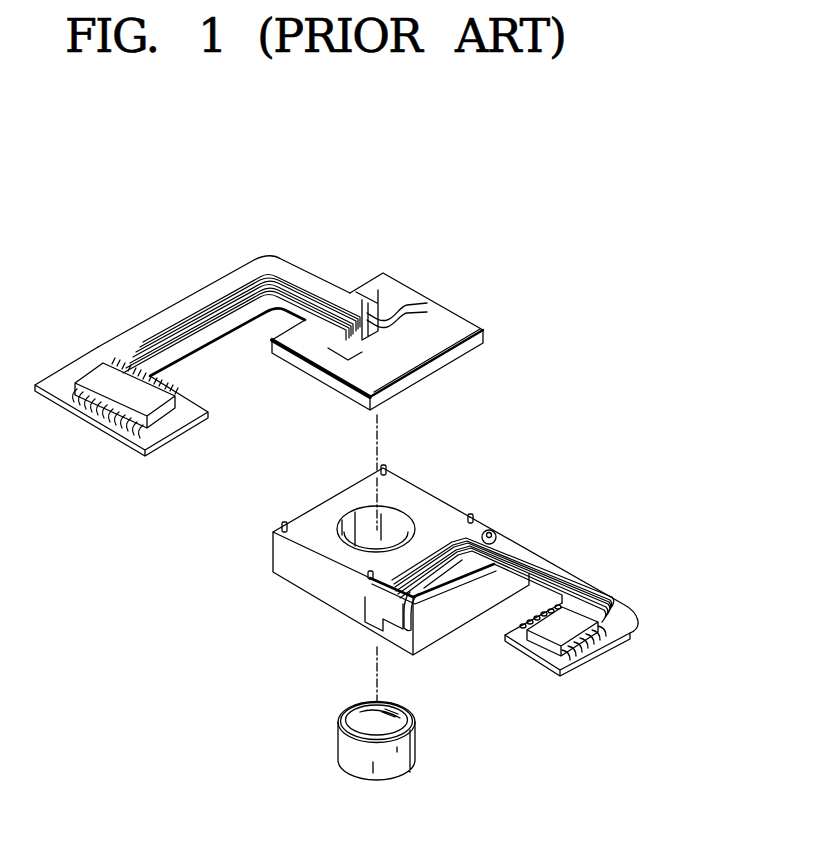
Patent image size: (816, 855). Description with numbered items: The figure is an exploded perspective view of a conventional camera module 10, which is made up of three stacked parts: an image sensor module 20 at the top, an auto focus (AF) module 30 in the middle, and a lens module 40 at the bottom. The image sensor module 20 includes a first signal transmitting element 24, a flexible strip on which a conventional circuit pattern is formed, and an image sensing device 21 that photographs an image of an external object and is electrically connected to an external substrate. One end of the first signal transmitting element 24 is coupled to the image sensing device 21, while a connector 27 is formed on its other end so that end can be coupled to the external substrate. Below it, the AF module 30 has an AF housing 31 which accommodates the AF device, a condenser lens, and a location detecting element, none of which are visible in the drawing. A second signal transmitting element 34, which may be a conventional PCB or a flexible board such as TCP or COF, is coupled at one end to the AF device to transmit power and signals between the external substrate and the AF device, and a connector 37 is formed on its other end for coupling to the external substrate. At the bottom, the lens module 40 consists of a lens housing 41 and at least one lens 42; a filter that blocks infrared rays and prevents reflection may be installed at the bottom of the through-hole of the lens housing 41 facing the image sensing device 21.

The camera module 10 is at (93, 237).
The image sensor module 20 is at (468, 286).
The image sensing device 21 is at (448, 360).
The first signal transmitting element 24 is at (235, 292).
The connector 27 is at (96, 376).
The auto focus (AF) module 30 is at (243, 546).
The AF housing 31 is at (433, 510).
The second signal transmitting element 34 is at (555, 572).
The connector 37 is at (538, 640).
The lens module 40 is at (320, 706).
The lens housing 41 is at (347, 744).
The lens 42 is at (362, 710).